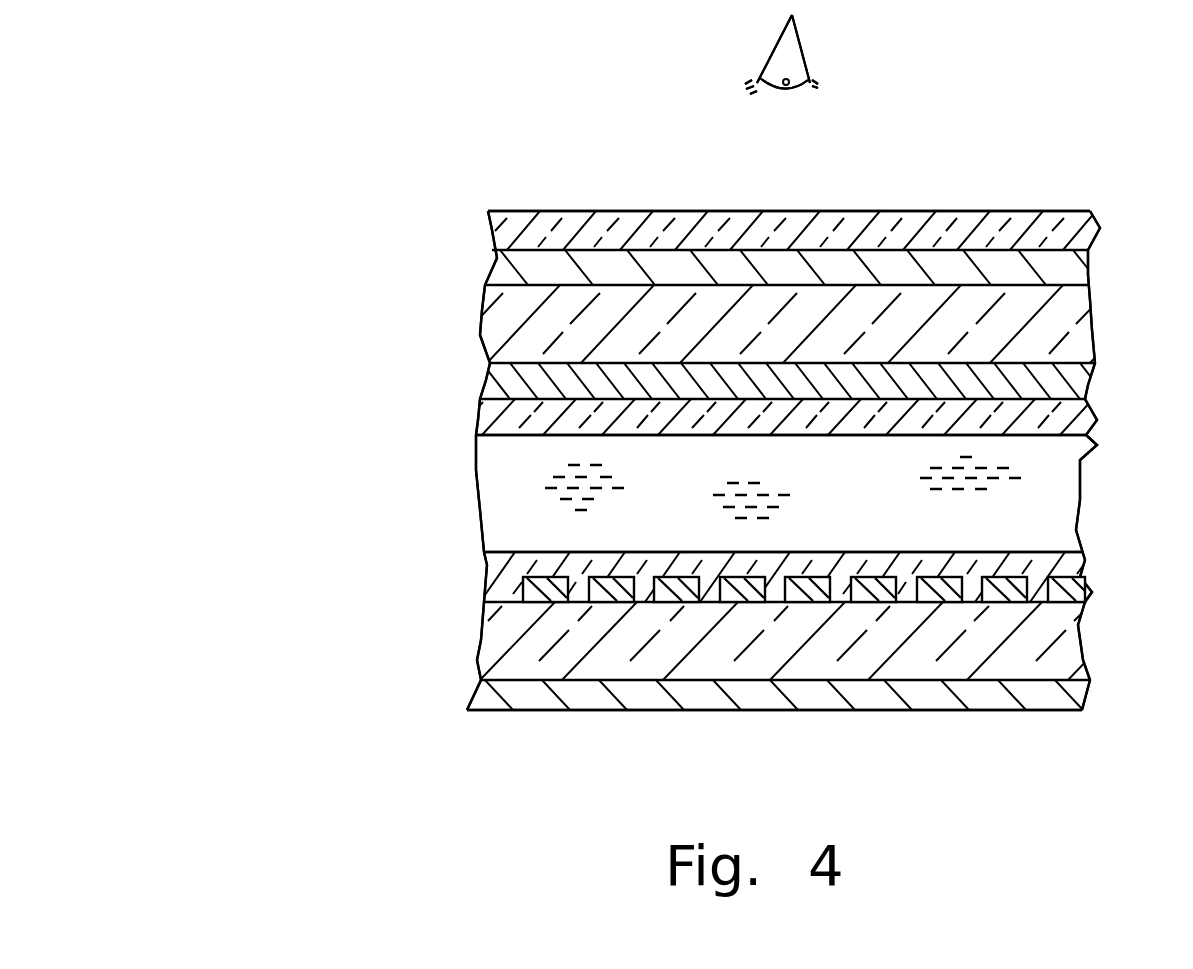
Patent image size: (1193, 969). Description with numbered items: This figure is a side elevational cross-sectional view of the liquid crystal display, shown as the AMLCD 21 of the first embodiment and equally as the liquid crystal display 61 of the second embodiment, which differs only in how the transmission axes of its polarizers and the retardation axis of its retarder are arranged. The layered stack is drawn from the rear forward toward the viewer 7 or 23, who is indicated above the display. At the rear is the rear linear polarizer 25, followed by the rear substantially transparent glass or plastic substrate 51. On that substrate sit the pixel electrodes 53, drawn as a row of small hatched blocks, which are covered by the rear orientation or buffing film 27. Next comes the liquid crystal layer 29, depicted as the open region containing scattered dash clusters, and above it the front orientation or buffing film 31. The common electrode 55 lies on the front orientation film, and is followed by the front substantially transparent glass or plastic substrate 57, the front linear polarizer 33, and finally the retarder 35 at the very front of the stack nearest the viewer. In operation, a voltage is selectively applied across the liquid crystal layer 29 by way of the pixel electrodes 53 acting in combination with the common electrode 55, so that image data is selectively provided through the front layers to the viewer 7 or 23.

The viewer 7 is at (786, 58).
The viewer 23 is at (781, 54).
The AMLCD 21 is at (345, 481).
The liquid crystal display 61 is at (783, 460).
The retarder 35 is at (490, 232).
The front linear polarizer 33 is at (1068, 274).
The front substantially transparent glass or plastic substrate 57 is at (1045, 340).
The common electrode 55 is at (487, 367).
The front orientation or buffing film 31 is at (1050, 428).
The liquid crystal layer 29 is at (1030, 515).
The rear orientation or buffing film 27 is at (490, 561).
The pixel electrodes 53 is at (520, 598).
The rear substantially transparent glass or plastic substrate 51 is at (1045, 637).
The rear linear polarizer 25 is at (1060, 703).